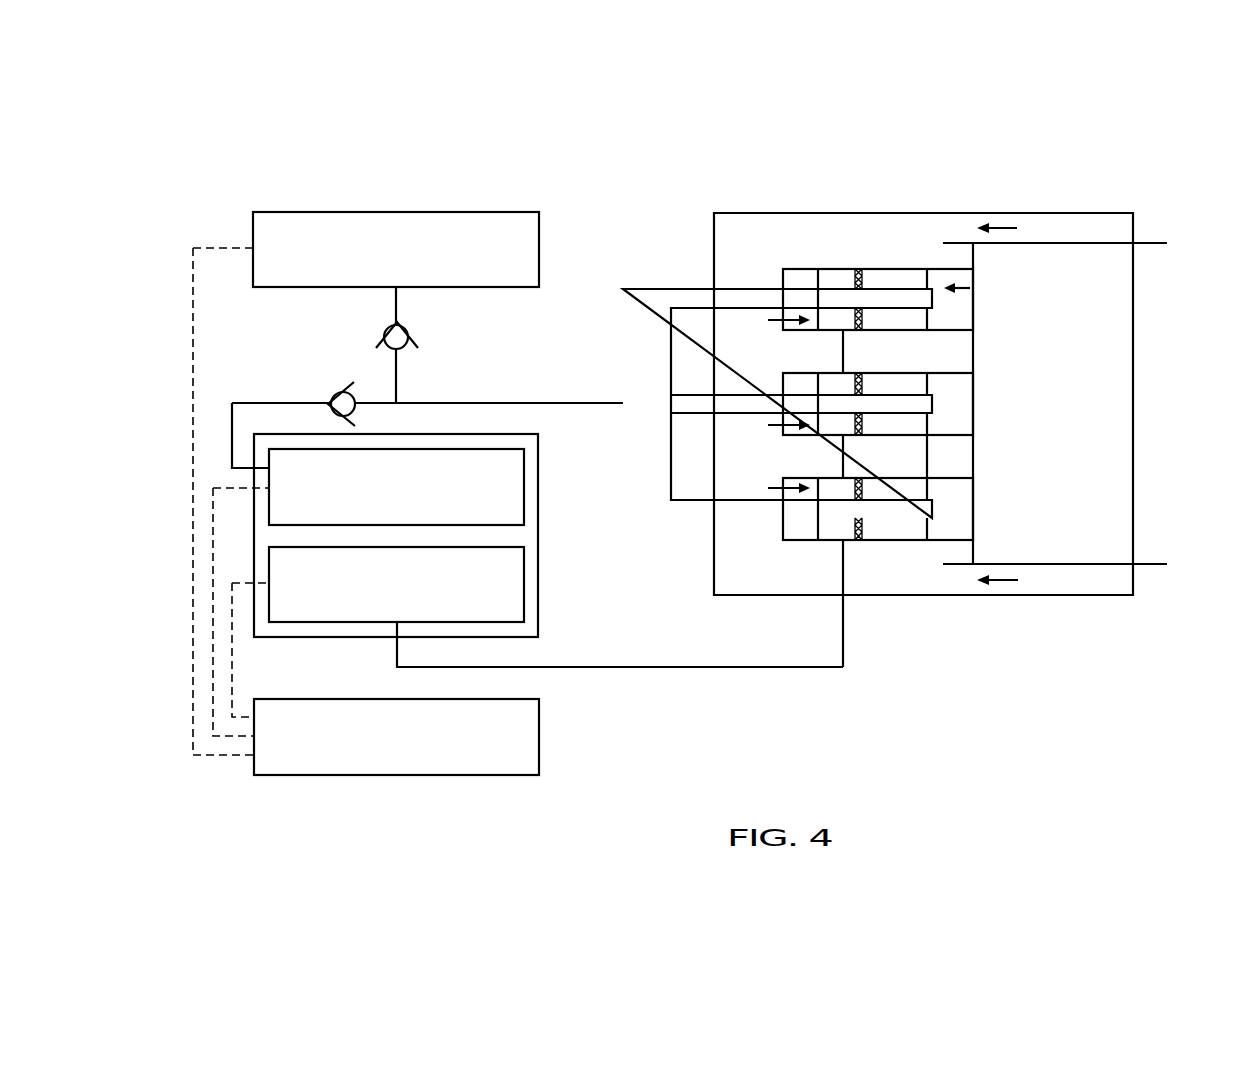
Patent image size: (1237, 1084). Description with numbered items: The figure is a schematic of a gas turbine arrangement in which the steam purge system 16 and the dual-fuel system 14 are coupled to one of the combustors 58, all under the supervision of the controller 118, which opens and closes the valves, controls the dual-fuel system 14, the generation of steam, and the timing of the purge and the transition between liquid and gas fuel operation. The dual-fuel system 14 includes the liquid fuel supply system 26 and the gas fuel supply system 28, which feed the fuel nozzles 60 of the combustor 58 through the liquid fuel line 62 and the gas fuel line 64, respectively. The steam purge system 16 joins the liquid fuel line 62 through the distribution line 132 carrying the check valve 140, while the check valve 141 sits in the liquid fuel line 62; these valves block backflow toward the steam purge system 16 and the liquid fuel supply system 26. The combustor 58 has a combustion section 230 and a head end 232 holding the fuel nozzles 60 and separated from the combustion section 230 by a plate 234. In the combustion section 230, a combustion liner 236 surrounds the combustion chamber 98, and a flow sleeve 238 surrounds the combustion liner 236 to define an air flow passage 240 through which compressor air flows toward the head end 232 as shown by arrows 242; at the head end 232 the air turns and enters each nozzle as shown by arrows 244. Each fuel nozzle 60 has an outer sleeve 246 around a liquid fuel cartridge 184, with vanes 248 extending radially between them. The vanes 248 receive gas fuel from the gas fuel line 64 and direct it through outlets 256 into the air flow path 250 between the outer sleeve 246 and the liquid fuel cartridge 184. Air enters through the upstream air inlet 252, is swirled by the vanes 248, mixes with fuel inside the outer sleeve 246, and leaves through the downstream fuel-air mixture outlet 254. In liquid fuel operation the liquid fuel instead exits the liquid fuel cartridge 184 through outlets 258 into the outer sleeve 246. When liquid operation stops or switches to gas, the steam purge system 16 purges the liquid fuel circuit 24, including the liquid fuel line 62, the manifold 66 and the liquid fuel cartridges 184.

The dual-fuel system 14 is at (538, 540).
The steam purge system 16 is at (397, 212).
The liquid fuel circuit 24 is at (677, 229).
The liquid fuel supply system 26 is at (524, 490).
The gas fuel supply system 28 is at (524, 590).
The combustor 58 is at (880, 213).
The fuel nozzles 60 is at (1076, 326).
The liquid fuel line 62 is at (514, 403).
The gas fuel line 64 is at (620, 668).
The manifold 66 is at (652, 289).
The combustion chamber 98 is at (1111, 378).
The controller 118 is at (539, 738).
The distribution line 132 is at (400, 373).
The check valve 140 is at (386, 328).
The check valve 141 is at (348, 388).
The liquid fuel cartridge 184 is at (973, 288).
The combustion section 230 is at (1083, 658).
The head end 232 is at (887, 644).
The plate 234 is at (973, 255).
The combustion liner 236 is at (1113, 563).
The flow sleeve 238 is at (1108, 598).
The air flow passage 240 is at (1045, 583).
The arrows 242 is at (1003, 225).
The arrows 244 is at (758, 268).
The outer sleeve 246 is at (903, 268).
The vanes 248 is at (842, 269).
The air flow path 250 is at (788, 326).
The upstream air inlet 252 is at (780, 395).
The downstream fuel-air mixture outlet 254 is at (973, 397).
The outlets 256 is at (866, 373).
The outlets 258 is at (933, 298).